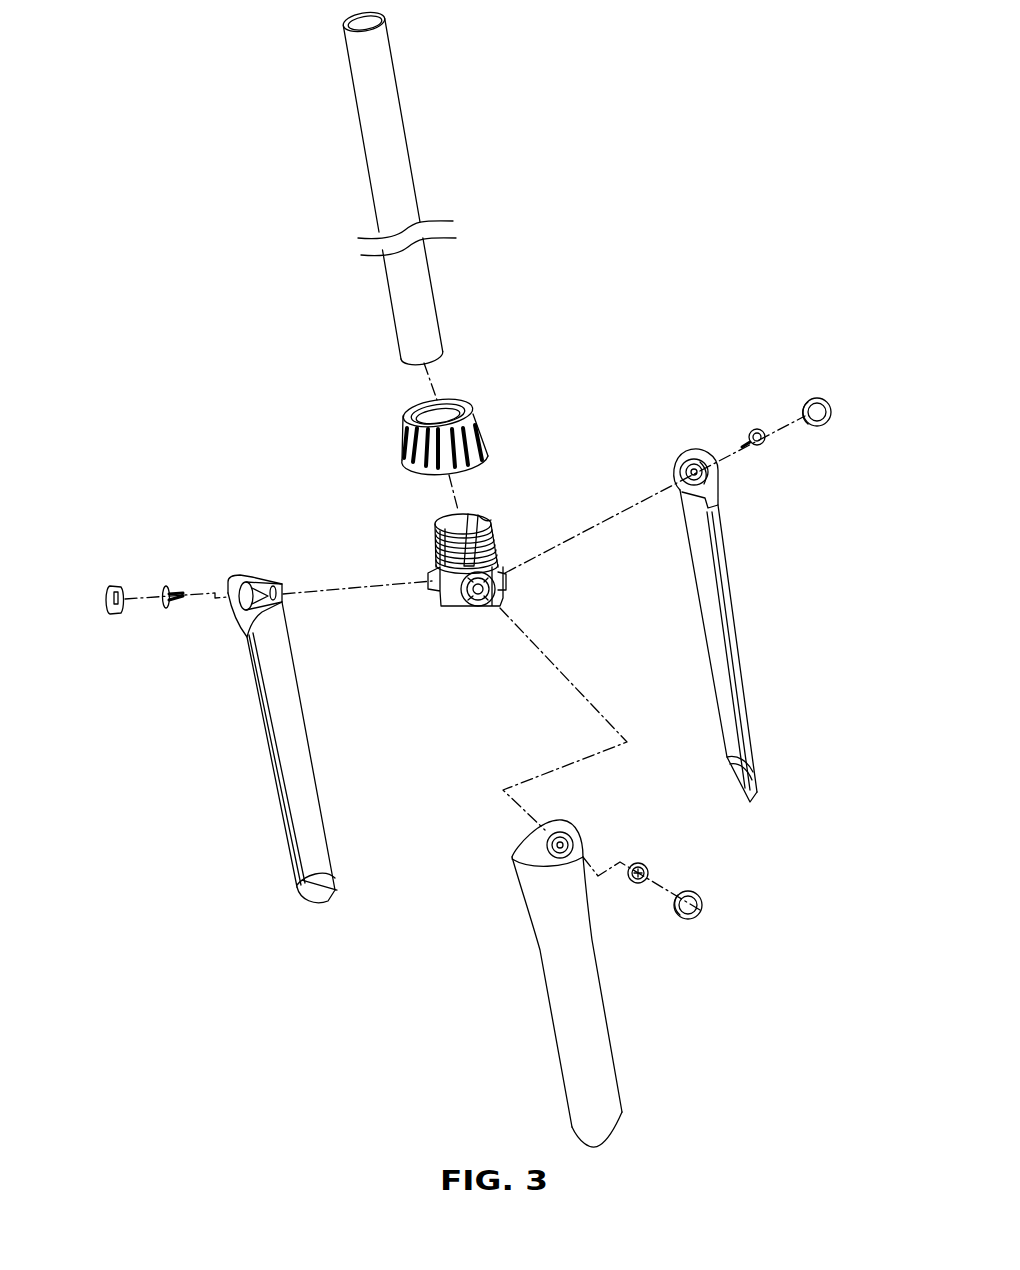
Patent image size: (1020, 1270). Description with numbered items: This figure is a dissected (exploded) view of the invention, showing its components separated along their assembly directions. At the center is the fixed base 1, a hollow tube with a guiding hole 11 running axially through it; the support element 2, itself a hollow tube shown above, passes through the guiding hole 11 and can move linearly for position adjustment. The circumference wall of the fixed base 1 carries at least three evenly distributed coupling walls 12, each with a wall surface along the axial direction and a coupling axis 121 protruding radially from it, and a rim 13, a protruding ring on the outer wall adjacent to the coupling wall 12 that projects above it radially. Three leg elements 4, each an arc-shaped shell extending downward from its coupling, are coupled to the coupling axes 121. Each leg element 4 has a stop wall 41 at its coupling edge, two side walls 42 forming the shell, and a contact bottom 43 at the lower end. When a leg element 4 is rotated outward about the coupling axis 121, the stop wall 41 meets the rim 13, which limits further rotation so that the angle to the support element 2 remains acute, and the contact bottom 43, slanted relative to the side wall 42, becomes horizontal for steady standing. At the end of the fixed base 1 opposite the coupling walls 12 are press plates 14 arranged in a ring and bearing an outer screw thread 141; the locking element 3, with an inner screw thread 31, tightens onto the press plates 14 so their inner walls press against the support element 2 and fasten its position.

The fixed base 1 is at (463, 548).
The guiding hole 11 is at (466, 522).
The coupling wall 12 is at (457, 609).
The coupling axis 121 is at (505, 571).
The rim 13 is at (432, 577).
The press plate 14 is at (452, 518).
The outer screw thread 141 is at (433, 556).
The support element 2 is at (397, 146).
The locking element 3 is at (440, 405).
The inner screw thread 31 is at (440, 416).
The leg element 4 is at (468, 772).
The stop wall 41 is at (262, 578).
The side wall 42 is at (265, 700).
The contact bottom 43 is at (307, 893).